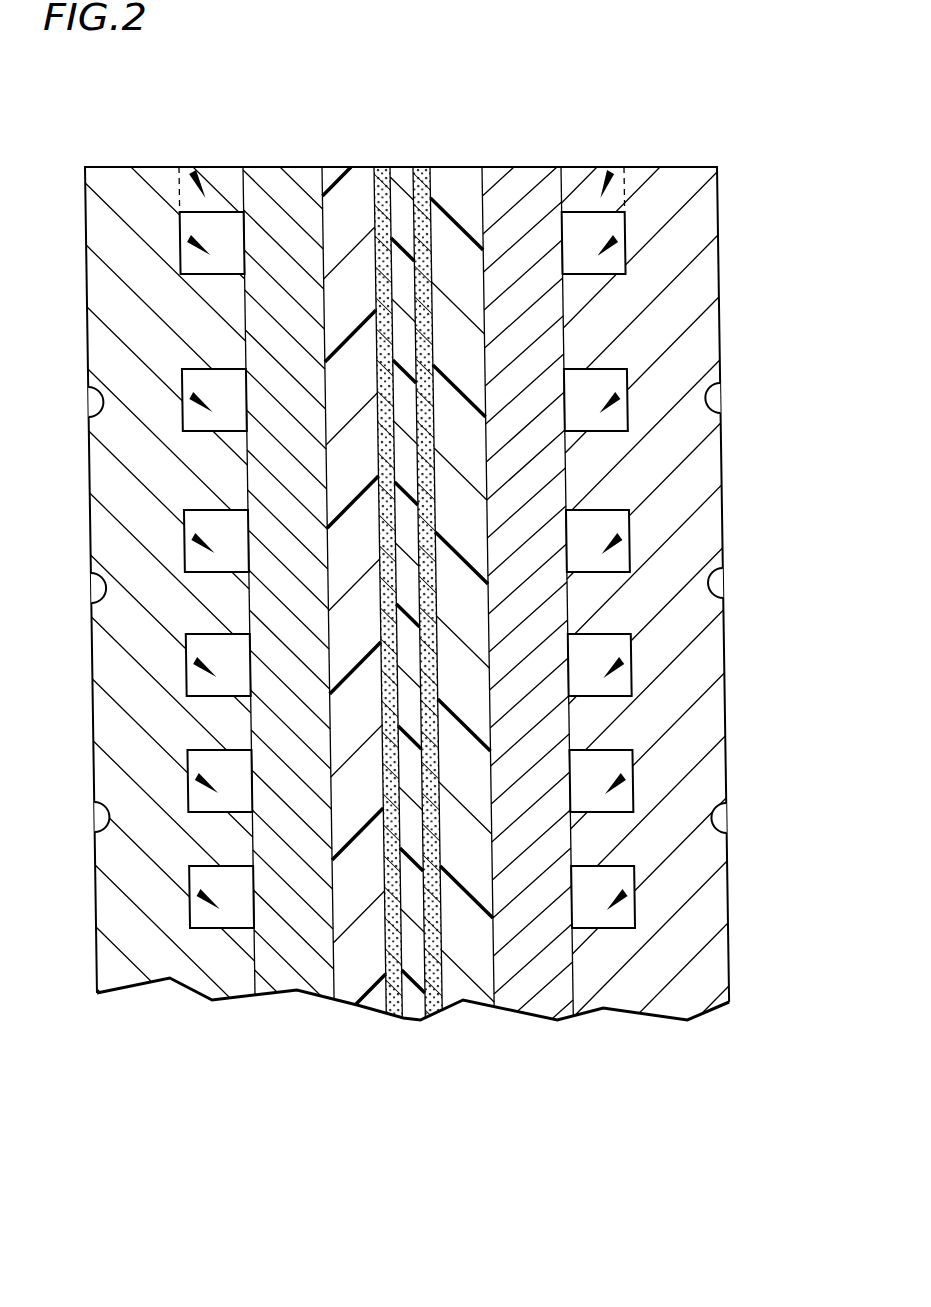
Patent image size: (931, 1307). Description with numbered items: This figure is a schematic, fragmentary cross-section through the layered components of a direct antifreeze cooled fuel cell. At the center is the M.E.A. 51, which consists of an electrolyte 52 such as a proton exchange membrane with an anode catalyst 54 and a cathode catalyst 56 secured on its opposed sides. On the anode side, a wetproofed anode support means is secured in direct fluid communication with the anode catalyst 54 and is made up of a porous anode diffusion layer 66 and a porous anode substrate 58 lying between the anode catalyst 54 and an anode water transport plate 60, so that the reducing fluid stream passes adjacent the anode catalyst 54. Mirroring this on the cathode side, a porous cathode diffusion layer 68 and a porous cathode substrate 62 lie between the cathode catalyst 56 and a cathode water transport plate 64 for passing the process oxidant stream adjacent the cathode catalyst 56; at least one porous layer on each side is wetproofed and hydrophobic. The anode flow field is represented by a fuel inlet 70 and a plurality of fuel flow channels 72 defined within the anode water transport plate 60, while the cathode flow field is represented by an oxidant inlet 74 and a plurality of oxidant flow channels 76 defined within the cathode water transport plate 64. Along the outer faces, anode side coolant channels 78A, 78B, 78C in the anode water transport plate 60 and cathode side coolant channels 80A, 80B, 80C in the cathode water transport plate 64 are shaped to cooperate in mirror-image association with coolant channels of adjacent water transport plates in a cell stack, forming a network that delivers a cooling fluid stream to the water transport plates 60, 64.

The M.E.A. 51 is at (419, 624).
The electrolyte 52 is at (410, 1018).
The anode catalyst 54 is at (400, 1018).
The cathode catalyst 56 is at (433, 1007).
The porous anode substrate 58 is at (280, 983).
The anode water transport plate 60 is at (190, 975).
The porous cathode substrate 62 is at (542, 1000).
The cathode water transport plate 64 is at (647, 993).
The porous anode diffusion layer 66 is at (353, 990).
The porous cathode diffusion layer 68 is at (470, 993).
The fuel inlet 70 is at (196, 167).
The fuel flow channels 72 is at (190, 900).
The oxidant inlet 74 is at (607, 167).
The oxidant flow channels 76 is at (634, 890).
The anode side coolant channel 78A is at (80, 400).
The anode side coolant channel 78B is at (80, 589).
The anode side coolant channel 78C is at (82, 817).
The cathode side coolant channel 80A is at (735, 398).
The cathode side coolant channel 80B is at (740, 583).
The cathode side coolant channel 80C is at (745, 812).